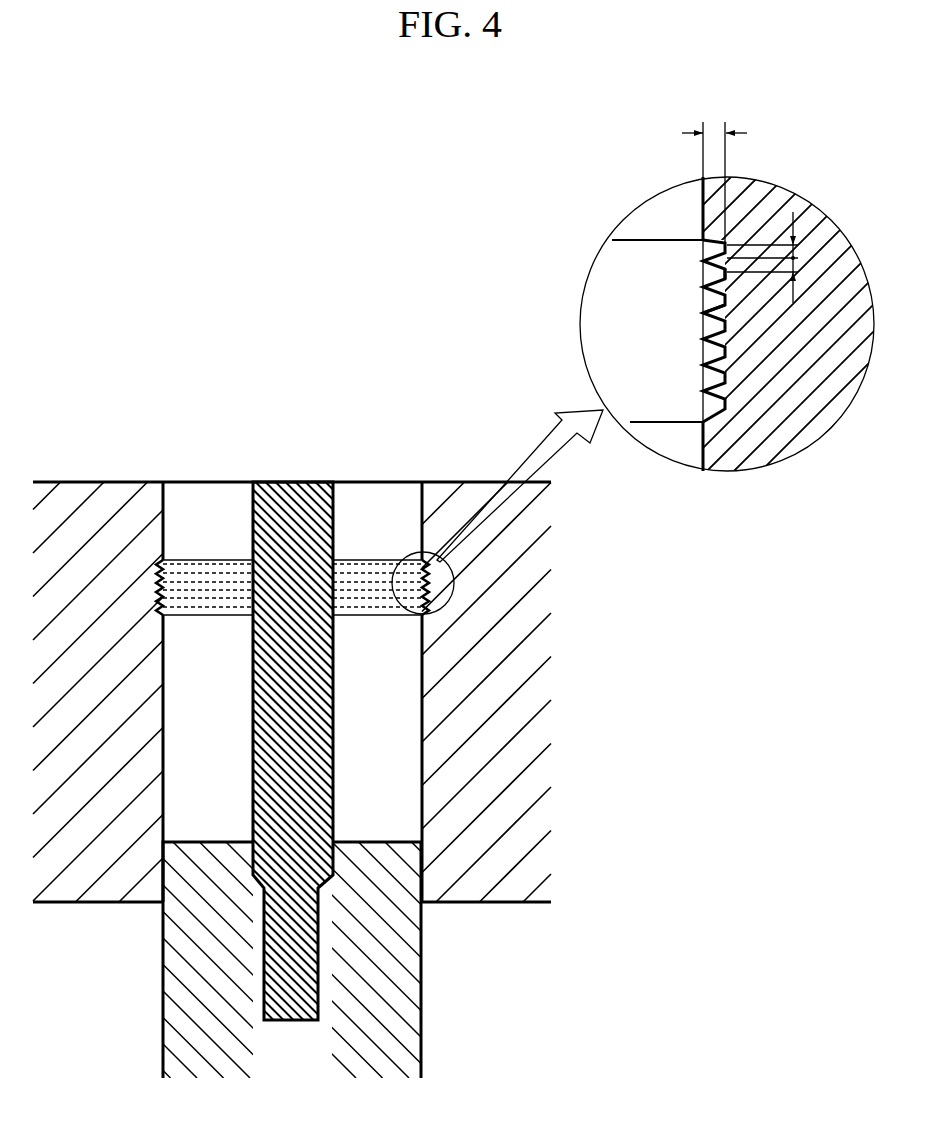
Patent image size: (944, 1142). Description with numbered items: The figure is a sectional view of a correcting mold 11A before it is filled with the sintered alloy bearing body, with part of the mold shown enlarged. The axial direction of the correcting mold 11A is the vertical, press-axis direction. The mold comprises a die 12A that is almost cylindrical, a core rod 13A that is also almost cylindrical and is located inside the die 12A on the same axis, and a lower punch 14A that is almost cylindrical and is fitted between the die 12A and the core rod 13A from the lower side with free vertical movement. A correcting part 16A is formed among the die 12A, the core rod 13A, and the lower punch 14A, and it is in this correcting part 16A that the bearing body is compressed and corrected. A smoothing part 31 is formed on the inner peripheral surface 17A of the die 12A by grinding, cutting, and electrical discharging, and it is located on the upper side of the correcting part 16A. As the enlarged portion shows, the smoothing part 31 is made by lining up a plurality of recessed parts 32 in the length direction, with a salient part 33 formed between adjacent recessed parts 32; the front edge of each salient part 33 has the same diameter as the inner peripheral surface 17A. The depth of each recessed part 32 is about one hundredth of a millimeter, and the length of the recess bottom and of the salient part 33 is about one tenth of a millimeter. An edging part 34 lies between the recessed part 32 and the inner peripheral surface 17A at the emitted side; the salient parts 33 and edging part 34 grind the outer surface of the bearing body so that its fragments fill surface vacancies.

The correcting mold 11A is at (366, 398).
The die 12A is at (520, 683).
The core rod 13A is at (292, 497).
The lower punch 14A is at (357, 946).
The correcting part 16A is at (385, 760).
The inner peripheral surface 17A is at (421, 552).
The smoothing part 31 is at (164, 582).
The recessed part 32 is at (703, 308).
The salient part 33 is at (703, 276).
The edging part 34 is at (701, 239).